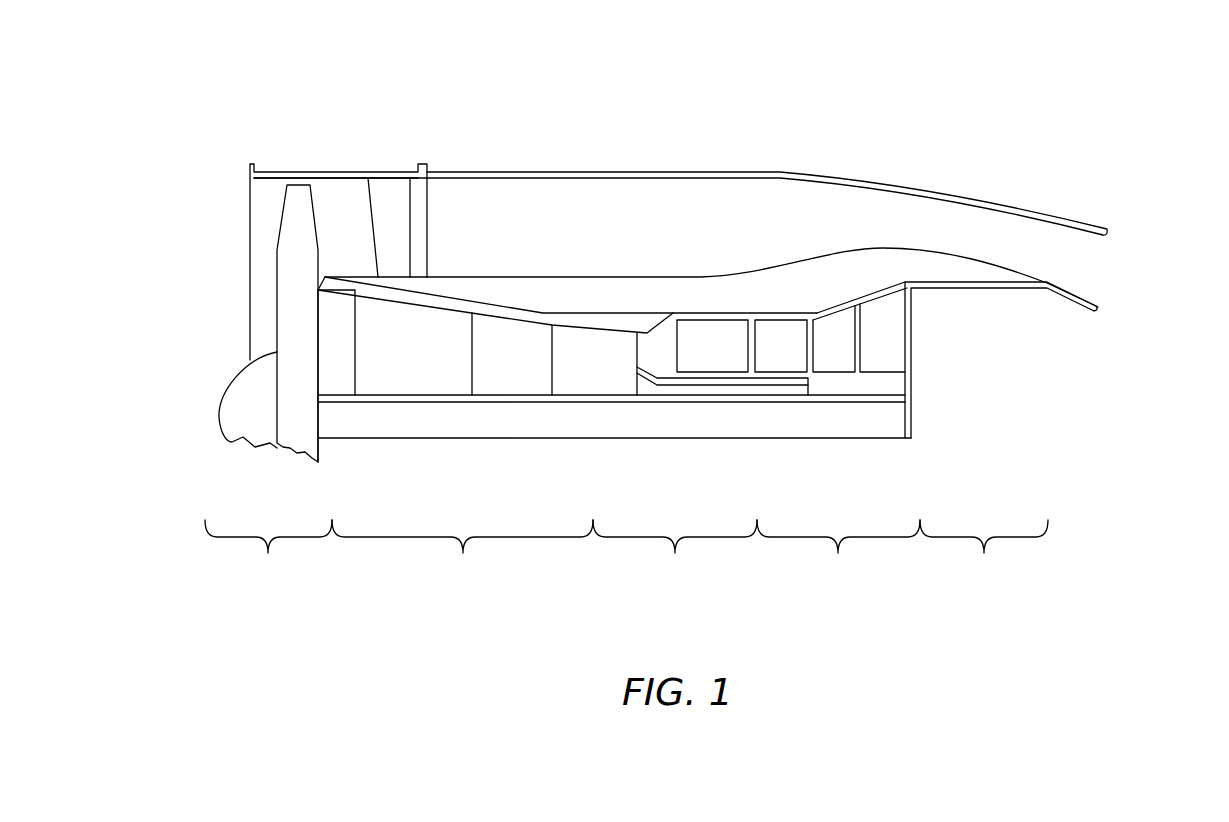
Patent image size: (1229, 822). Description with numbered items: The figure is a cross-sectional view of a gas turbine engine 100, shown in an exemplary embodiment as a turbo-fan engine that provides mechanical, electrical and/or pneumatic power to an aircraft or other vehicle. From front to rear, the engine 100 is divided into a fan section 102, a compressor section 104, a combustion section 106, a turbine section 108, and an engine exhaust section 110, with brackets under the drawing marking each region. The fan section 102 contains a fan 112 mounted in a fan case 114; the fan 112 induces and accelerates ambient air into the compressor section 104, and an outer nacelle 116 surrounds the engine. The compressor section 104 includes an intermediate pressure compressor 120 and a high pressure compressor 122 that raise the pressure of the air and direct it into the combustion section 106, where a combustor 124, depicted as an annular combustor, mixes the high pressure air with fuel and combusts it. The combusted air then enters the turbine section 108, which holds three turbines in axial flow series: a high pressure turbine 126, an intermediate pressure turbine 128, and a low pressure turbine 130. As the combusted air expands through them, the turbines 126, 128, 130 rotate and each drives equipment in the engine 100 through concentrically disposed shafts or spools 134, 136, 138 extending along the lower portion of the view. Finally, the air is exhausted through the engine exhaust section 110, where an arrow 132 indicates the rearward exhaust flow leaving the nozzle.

The gas turbine engine 100 is at (464, 140).
The fan section 102 is at (268, 554).
The compressor section 104 is at (462, 554).
The combustion section 106 is at (675, 554).
The turbine section 108 is at (838, 554).
The engine exhaust section 110 is at (984, 554).
The fan 112 is at (285, 276).
The fan case 114 is at (345, 172).
The nacelle 116 is at (600, 190).
The intermediate pressure compressor 120 is at (420, 383).
The high pressure compressor 122 is at (594, 383).
The combustor 124 is at (724, 335).
The high pressure turbine 126 is at (785, 335).
The intermediate pressure turbine 128 is at (837, 335).
The low pressure turbine 130 is at (895, 317).
The exhaust gas flow 132 is at (1075, 356).
The shaft 134 is at (681, 386).
The shaft 136 is at (762, 397).
The shaft 138 is at (827, 428).